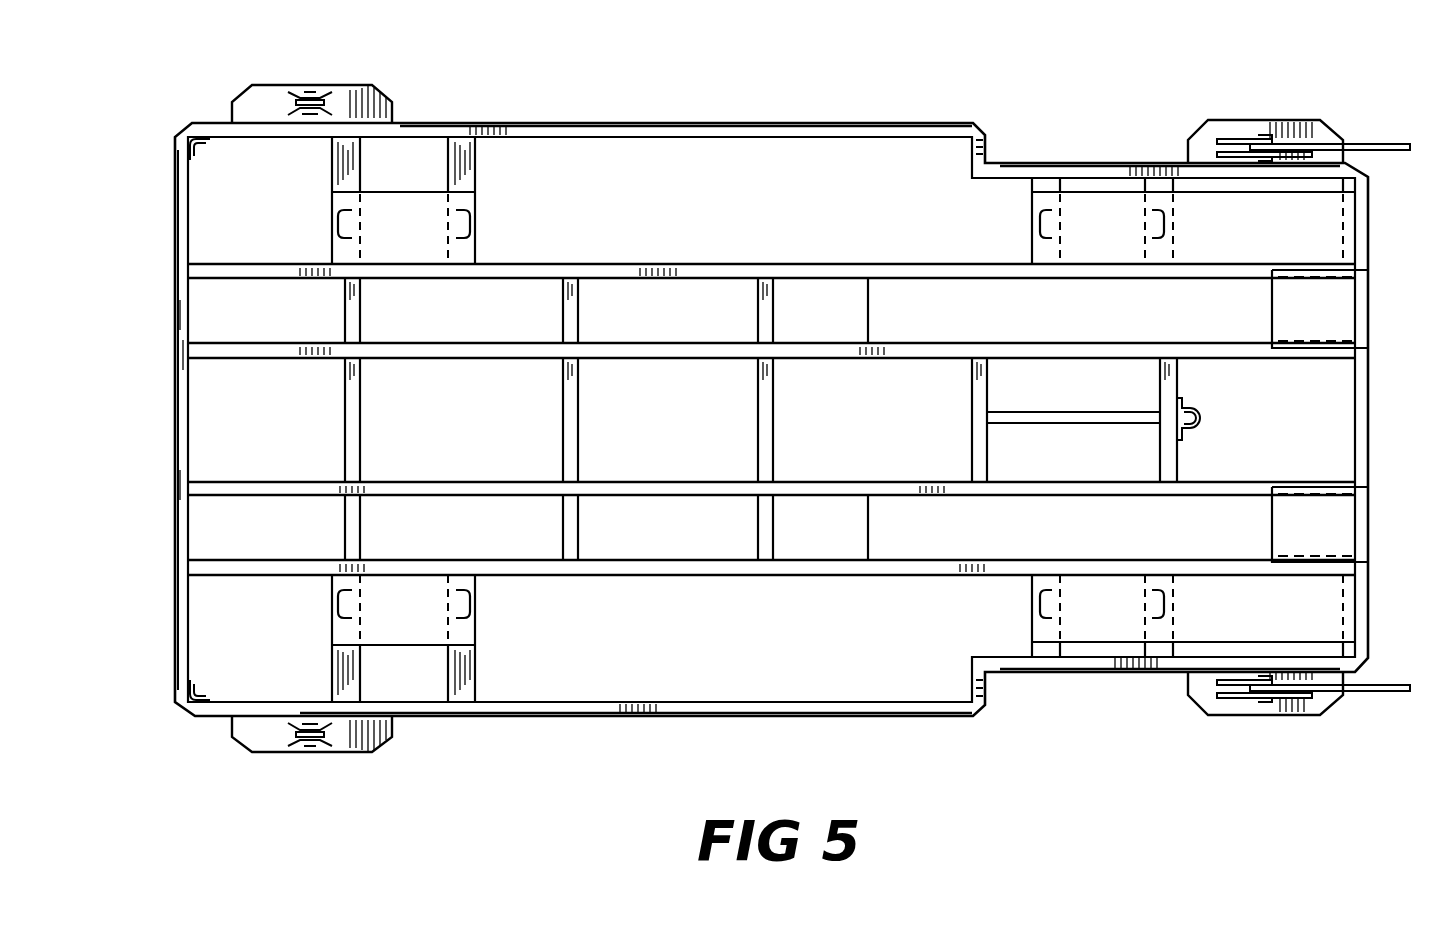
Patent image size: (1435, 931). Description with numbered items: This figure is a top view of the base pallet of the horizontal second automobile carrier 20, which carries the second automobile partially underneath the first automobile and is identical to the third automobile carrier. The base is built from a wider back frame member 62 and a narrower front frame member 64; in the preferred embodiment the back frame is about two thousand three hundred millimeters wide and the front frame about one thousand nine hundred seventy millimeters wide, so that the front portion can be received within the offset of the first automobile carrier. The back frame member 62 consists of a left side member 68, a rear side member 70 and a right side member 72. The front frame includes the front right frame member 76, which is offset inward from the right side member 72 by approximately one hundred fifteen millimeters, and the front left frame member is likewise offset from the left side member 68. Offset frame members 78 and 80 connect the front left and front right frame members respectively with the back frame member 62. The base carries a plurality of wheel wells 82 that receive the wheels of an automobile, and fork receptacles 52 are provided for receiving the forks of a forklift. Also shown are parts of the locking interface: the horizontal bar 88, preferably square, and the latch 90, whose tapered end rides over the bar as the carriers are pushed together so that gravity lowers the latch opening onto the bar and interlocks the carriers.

The second automobile carrier 20 is at (771, 380).
The fork receptacles 52 is at (838, 325).
The back frame member 62 is at (542, 122).
The front frame member 64 is at (1093, 165).
The left side member 68 is at (848, 122).
The rear side member 70 is at (177, 418).
The right side member 72 is at (540, 716).
The front right frame member 76 is at (1095, 667).
The offset frame member 78 is at (985, 150).
The offset frame member 80 is at (982, 684).
The wheel wells 82 is at (426, 243).
The horizontal bar 88 is at (355, 95).
The latch 90 is at (1309, 434).